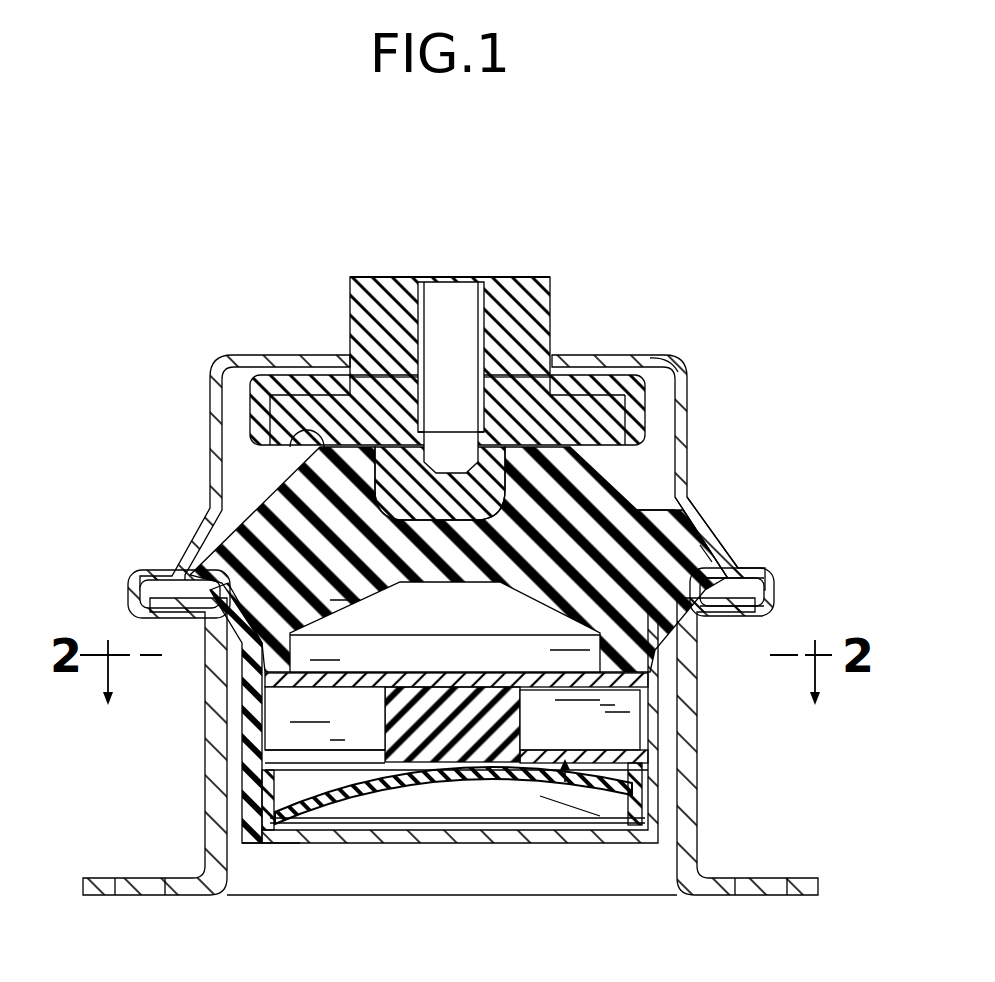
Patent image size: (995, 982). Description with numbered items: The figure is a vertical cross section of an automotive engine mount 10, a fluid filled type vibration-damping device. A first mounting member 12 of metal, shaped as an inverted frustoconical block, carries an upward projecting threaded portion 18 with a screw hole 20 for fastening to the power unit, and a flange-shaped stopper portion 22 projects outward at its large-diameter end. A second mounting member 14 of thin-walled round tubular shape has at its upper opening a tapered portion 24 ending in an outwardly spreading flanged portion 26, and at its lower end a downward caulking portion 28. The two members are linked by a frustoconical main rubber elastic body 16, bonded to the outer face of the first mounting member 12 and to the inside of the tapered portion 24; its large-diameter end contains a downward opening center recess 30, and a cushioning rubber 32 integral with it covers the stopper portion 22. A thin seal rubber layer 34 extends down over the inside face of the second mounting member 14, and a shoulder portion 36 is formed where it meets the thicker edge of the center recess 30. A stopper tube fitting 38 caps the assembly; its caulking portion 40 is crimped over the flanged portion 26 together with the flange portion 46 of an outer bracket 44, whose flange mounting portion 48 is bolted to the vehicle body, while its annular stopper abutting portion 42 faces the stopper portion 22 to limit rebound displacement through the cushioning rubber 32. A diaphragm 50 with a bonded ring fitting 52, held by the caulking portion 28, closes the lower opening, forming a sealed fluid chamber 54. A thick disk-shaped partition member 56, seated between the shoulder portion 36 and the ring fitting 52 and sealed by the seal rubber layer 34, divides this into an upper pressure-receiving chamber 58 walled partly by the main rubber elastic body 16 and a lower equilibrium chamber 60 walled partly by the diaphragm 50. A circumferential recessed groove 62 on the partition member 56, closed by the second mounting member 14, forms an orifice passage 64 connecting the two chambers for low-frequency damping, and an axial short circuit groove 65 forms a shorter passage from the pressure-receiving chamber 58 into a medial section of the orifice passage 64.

The automotive engine mount 10 is at (648, 238).
The first mounting member 12 is at (370, 266).
The second mounting member 14 is at (220, 699).
The main rubber elastic body 16 is at (250, 568).
The threaded portion 18 is at (535, 312).
The screw hole 20 is at (478, 325).
The stopper portion 22 is at (605, 415).
The tapered portion 24 is at (668, 614).
The flanged portion 26 is at (732, 575).
The caulking portion 28 is at (255, 844).
The center recess 30 is at (690, 520).
The cushioning rubber 32 is at (300, 388).
The seal rubber layer 34 is at (645, 812).
The shoulder portion 36 is at (655, 686).
The stopper tube fitting 38 is at (694, 432).
The caulking portion 40 is at (764, 588).
The stopper abutting portion 42 is at (650, 360).
The outer bracket 44 is at (200, 824).
The flange portion 46 is at (742, 600).
The flange mounting portion 48 is at (800, 880).
The diaphragm 50 is at (475, 782).
The ring fitting 52 is at (612, 807).
The fluid chamber 54 is at (705, 558).
The partition member 56 is at (562, 790).
The pressure-receiving chamber 58 is at (437, 627).
The equilibrium chamber 60 is at (584, 777).
The recessed groove 62 is at (603, 732).
The orifice passage 64 is at (628, 712).
The short circuit groove 65 is at (264, 684).